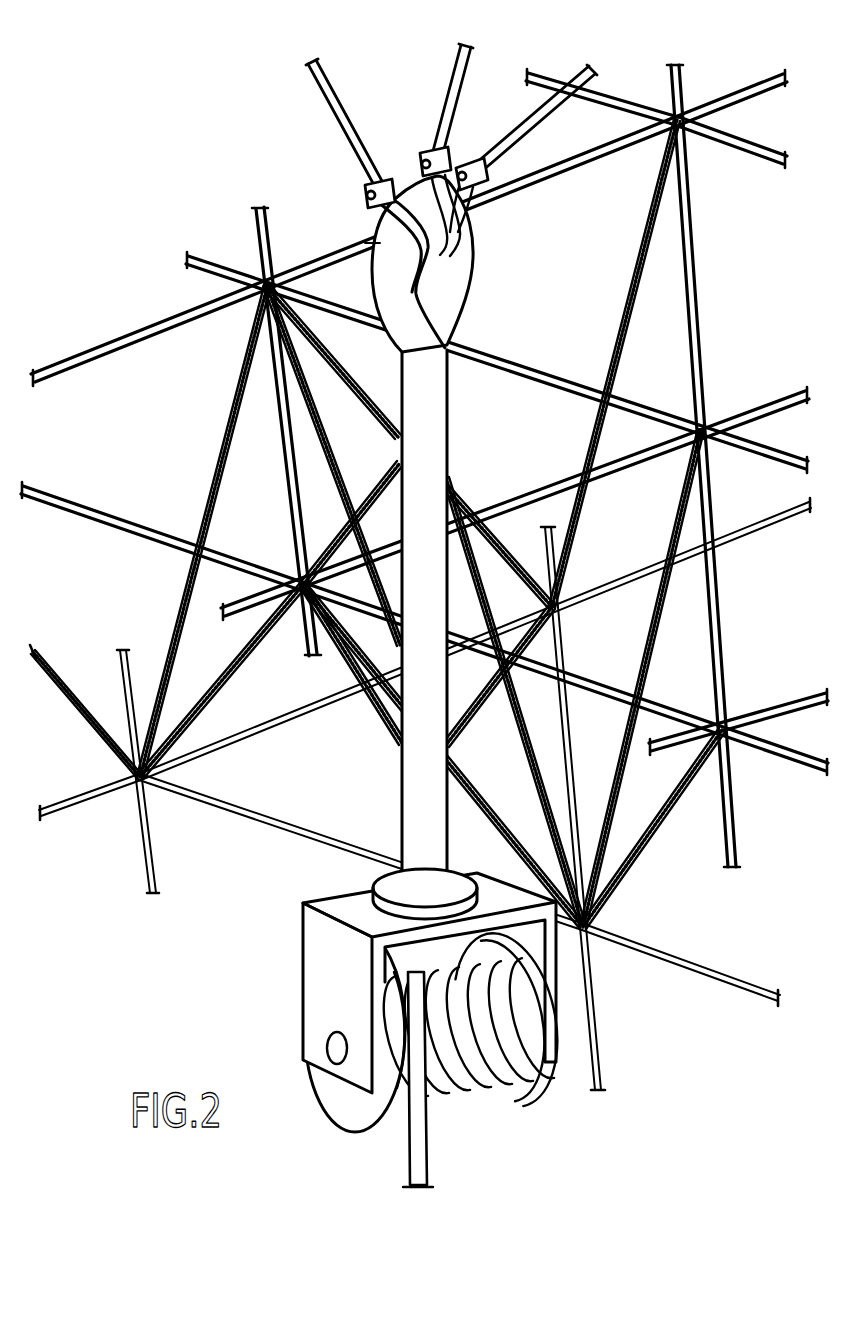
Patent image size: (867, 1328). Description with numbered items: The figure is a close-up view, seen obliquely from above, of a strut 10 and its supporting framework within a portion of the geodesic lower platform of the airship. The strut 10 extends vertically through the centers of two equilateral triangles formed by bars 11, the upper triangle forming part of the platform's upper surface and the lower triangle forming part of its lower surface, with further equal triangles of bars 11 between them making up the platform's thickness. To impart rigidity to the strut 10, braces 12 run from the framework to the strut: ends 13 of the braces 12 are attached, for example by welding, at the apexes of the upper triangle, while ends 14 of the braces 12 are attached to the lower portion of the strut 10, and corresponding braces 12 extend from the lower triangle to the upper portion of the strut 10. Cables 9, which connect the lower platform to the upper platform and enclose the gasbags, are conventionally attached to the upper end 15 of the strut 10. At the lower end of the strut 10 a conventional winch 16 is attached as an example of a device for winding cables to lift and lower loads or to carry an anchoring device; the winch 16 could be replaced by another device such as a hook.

The cables 9 is at (330, 87).
The strut 10 is at (402, 382).
The bars 11 is at (100, 348).
The braces 12 is at (436, 478).
The ends of braces 13 is at (272, 278).
The ends of braces 14 is at (398, 648).
The end of strut 15 is at (380, 243).
The winch 16 is at (302, 968).